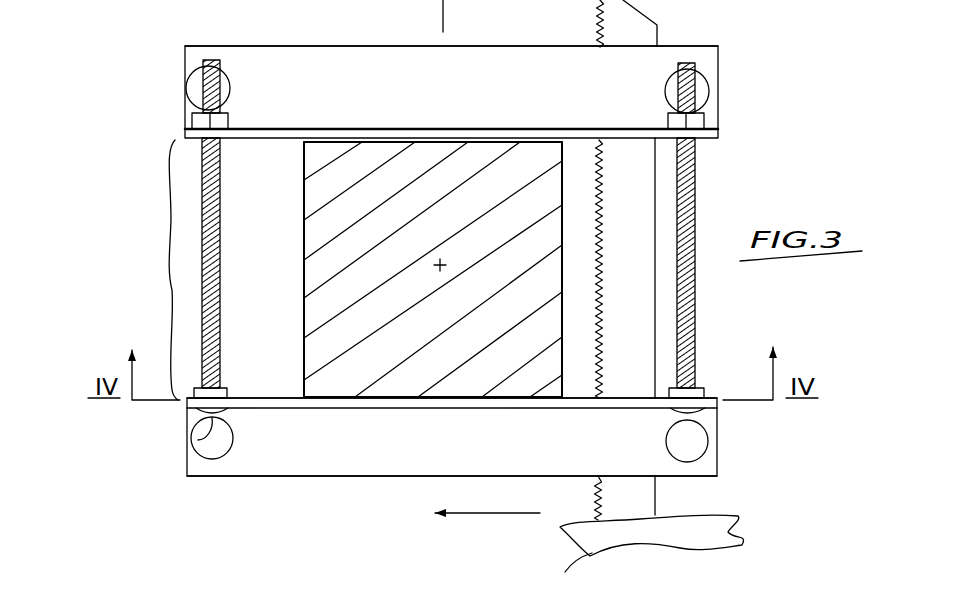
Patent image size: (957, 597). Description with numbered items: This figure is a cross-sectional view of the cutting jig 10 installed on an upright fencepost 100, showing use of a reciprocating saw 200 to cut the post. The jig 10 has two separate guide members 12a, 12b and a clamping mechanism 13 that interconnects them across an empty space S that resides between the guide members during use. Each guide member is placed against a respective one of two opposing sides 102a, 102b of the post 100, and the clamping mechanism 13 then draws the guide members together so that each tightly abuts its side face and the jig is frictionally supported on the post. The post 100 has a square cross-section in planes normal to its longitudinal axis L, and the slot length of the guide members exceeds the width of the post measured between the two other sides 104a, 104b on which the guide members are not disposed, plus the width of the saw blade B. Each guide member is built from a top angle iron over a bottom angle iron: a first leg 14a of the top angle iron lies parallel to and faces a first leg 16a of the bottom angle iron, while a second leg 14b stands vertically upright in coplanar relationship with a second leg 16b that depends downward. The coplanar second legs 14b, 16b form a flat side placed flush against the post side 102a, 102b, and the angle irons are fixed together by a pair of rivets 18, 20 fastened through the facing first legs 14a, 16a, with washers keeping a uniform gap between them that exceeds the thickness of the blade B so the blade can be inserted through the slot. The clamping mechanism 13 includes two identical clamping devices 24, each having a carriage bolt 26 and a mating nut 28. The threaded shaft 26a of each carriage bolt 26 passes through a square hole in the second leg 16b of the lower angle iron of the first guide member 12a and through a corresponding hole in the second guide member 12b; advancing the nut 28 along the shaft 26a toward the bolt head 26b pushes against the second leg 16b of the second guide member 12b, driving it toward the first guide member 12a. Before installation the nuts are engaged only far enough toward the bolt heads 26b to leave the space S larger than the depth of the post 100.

The cutting jig 10 is at (466, 74).
The first guide member 12a is at (412, 459).
The second guide member 12b is at (425, 74).
The clamping mechanism 13 is at (485, 253).
The first leg of the top angle iron 14a is at (312, 466).
The second leg of the top angle iron 14b is at (430, 404).
The first leg of the bottom angle iron 16a is at (300, 80).
The second leg of the bottom angle iron 16b is at (447, 128).
The rivet 18 is at (708, 90).
The rivet 20 is at (196, 87).
The clamping device 24 is at (485, 253).
The carriage bolt 26 is at (482, 253).
The threaded shaft 26a is at (215, 268).
The bolt head 26b is at (230, 432).
The nut 28 is at (232, 124).
The fencepost 100 is at (405, 264).
The side of the post 102a is at (500, 400).
The side of the post 102b is at (368, 142).
The side of the post 104a is at (302, 264).
The side of the post 104b is at (567, 172).
The reciprocating saw 200 is at (712, 497).
The longitudinal axis L is at (445, 258).
The blade B is at (617, 224).
The space S is at (163, 270).